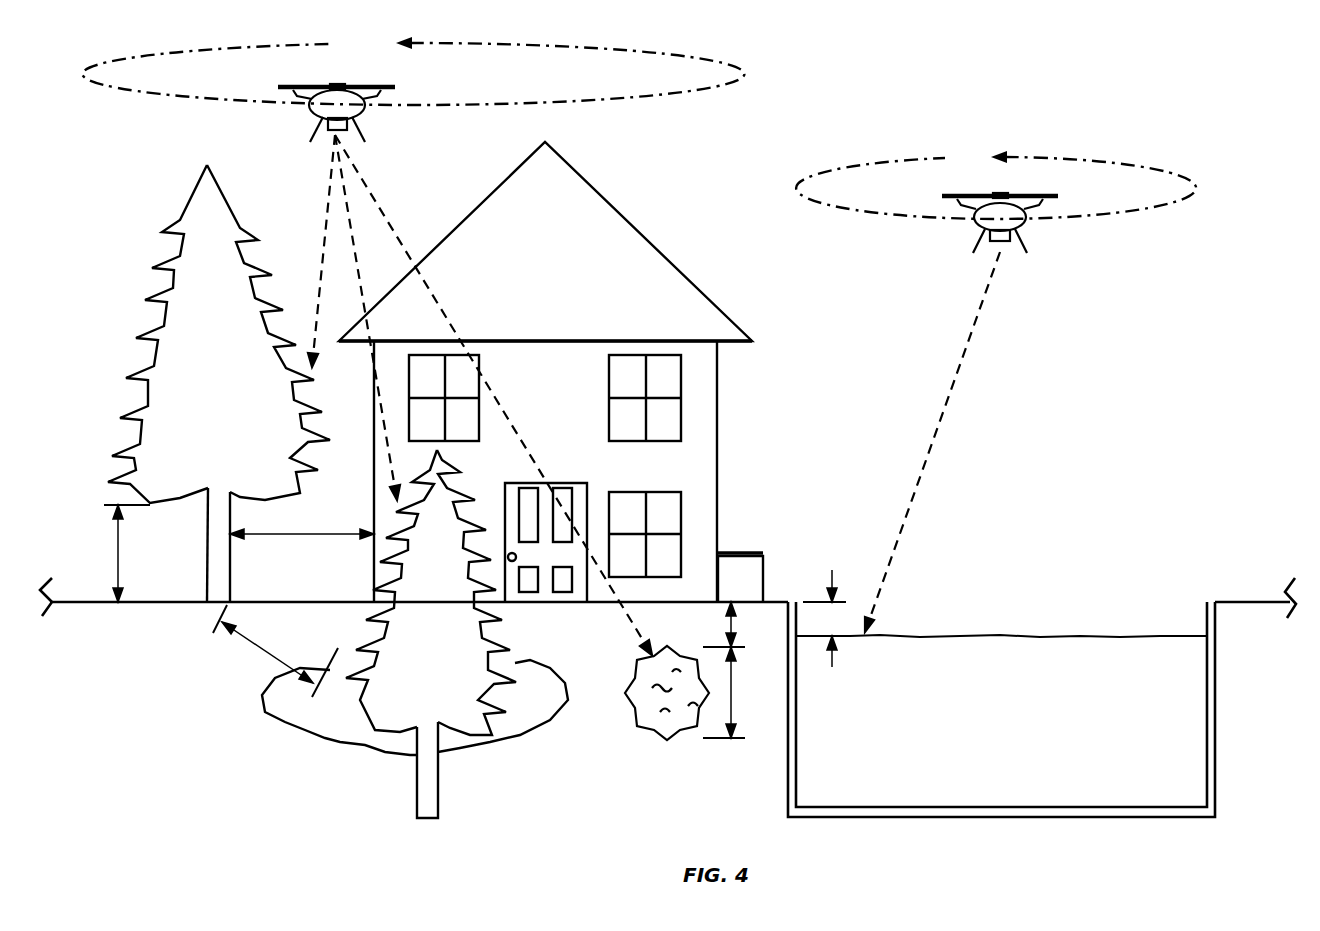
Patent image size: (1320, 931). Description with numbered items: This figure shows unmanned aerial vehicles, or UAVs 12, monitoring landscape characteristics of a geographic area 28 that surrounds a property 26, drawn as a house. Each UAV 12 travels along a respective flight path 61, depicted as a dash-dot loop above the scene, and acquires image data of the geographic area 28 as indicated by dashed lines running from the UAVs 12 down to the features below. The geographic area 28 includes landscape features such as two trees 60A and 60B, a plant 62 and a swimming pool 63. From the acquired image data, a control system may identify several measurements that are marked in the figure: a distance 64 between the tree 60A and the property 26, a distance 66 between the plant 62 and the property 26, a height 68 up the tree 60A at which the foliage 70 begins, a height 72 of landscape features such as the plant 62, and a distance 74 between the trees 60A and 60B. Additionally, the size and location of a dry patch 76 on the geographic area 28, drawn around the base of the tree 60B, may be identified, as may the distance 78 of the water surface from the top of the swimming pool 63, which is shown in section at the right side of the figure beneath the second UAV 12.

The UAV 12 is at (345, 82).
The property 26 is at (650, 243).
The geographic area 28 is at (1180, 285).
The tree 60A is at (172, 228).
The tree 60B is at (352, 645).
The flight path 61 is at (742, 70).
The plant 62 is at (638, 668).
The swimming pool 63 is at (1210, 603).
The distance 64 is at (306, 534).
The distance 66 is at (731, 625).
The height 68 is at (118, 560).
The foliage 70 is at (118, 480).
The height 72 is at (731, 698).
The distance 74 is at (266, 660).
The dry patch 76 is at (316, 725).
The distance 78 is at (832, 580).